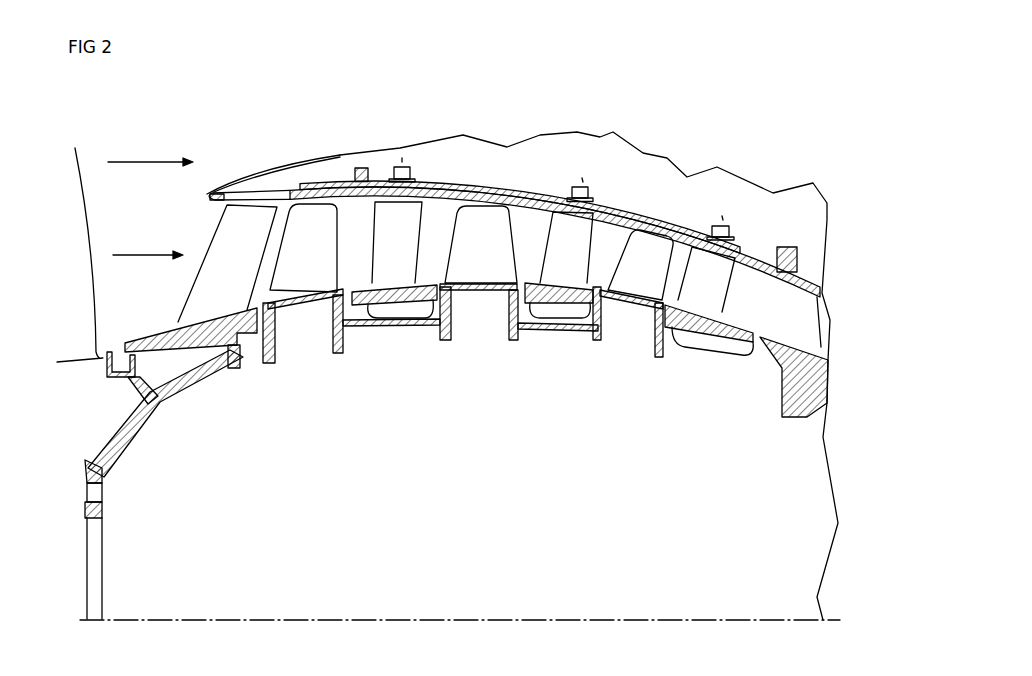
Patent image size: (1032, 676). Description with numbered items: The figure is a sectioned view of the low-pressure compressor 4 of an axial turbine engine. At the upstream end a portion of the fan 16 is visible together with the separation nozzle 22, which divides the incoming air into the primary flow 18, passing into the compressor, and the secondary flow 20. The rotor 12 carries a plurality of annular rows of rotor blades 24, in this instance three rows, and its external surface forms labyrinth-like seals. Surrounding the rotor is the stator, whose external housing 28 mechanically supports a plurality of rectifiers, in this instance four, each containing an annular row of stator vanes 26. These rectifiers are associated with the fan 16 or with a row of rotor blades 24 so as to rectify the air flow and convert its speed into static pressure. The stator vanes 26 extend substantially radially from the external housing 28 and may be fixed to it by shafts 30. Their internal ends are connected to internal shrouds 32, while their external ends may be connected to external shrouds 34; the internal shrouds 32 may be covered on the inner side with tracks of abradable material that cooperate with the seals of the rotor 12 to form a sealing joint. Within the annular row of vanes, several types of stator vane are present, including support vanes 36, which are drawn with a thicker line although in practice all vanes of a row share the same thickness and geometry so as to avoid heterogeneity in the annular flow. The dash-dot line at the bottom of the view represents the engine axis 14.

The low-pressure compressor 4 is at (708, 128).
The rotor 12 is at (103, 479).
The rotational axis 14 is at (543, 620).
The fan 16 is at (81, 265).
The primary flow 18 is at (148, 242).
The secondary flow 20 is at (150, 150).
The separation nozzle 22 is at (207, 199).
The rotor blades 24 is at (468, 283).
The stator vanes 26 is at (456, 262).
The external housing 28 is at (537, 197).
The shafts 30 is at (404, 167).
The internal shrouds 32 is at (147, 342).
The external shrouds 34 is at (424, 193).
The support vanes 36 is at (663, 215).